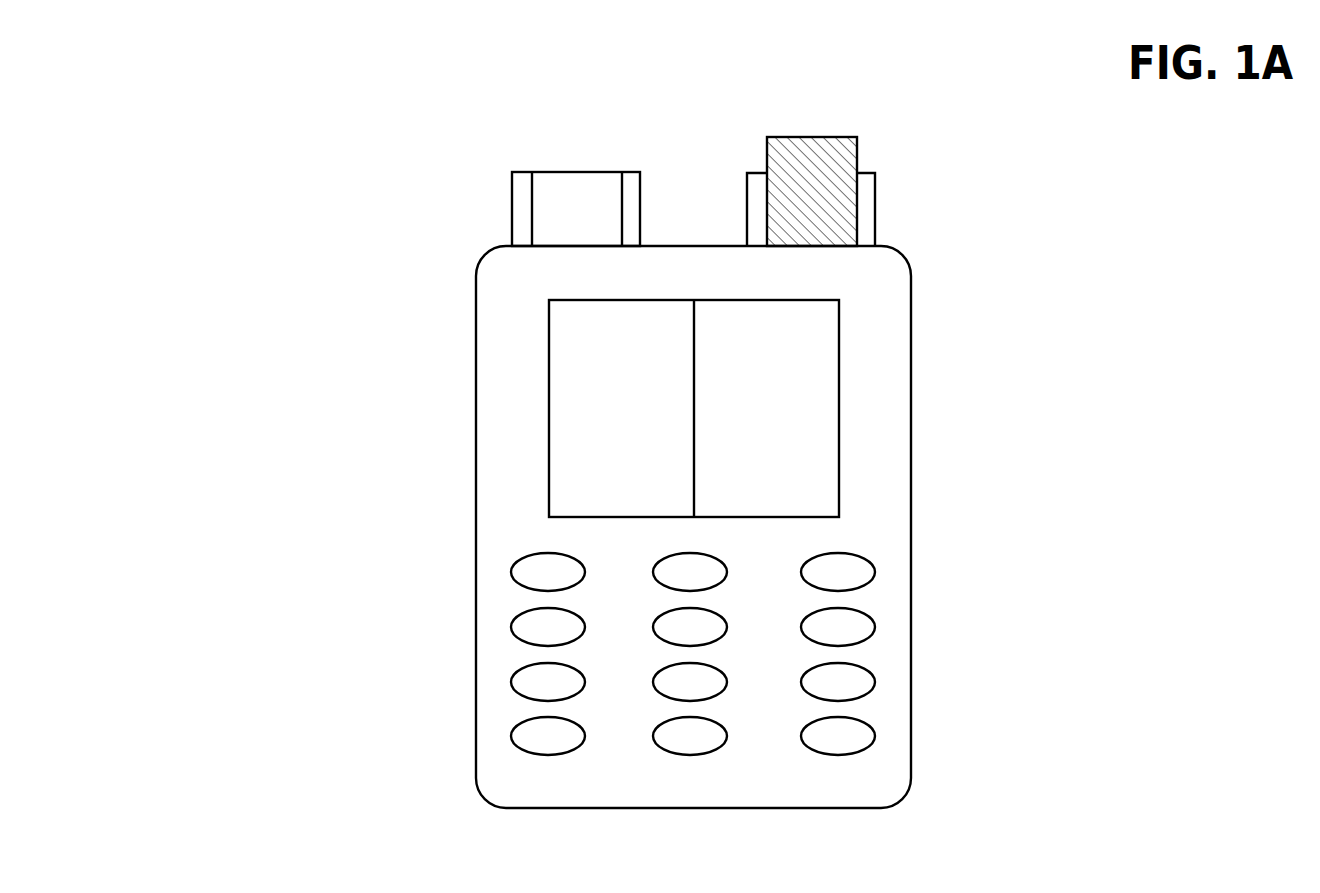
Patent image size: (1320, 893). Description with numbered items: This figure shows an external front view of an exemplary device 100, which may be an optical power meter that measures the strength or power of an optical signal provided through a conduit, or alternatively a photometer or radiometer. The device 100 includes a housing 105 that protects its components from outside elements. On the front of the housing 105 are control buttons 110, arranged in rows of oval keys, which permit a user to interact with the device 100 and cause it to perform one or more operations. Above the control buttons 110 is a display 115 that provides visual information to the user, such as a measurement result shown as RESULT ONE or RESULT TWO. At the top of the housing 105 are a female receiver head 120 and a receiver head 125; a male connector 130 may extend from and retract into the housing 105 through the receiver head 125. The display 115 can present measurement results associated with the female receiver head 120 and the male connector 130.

The device 100 is at (224, 73).
The housing 105 is at (476, 462).
The control buttons 110 is at (892, 553).
The display 115 is at (839, 408).
The female receiver head 120 is at (502, 207).
The receiver head 125 is at (886, 208).
The male connector 130 is at (812, 163).